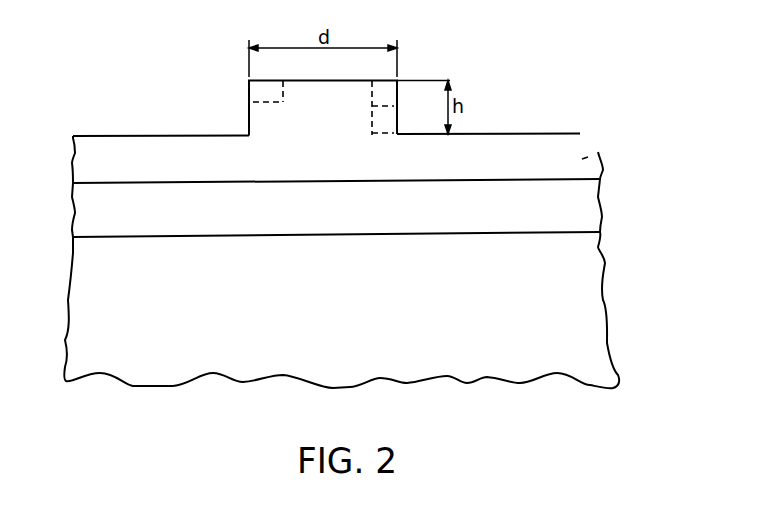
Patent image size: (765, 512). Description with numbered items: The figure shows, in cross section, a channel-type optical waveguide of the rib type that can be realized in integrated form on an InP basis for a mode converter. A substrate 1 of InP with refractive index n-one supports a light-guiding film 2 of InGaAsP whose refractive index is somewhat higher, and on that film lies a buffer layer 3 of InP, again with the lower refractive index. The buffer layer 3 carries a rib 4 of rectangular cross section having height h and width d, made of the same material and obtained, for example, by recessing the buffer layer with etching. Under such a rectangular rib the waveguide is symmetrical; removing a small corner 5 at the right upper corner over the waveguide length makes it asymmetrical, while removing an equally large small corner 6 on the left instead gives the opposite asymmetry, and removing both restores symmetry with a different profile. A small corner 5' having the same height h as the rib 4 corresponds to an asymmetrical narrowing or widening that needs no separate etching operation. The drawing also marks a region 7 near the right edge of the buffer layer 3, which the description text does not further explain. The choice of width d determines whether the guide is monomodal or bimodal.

The substrate 1 is at (580, 280).
The light-guiding film 2 is at (583, 210).
The buffer layer 3 is at (598, 153).
The rib 4 is at (265, 123).
The small corner 5 is at (403, 108).
The small corner 5' is at (405, 123).
The small corner 6 is at (262, 92).
The surface region 7 is at (597, 152).